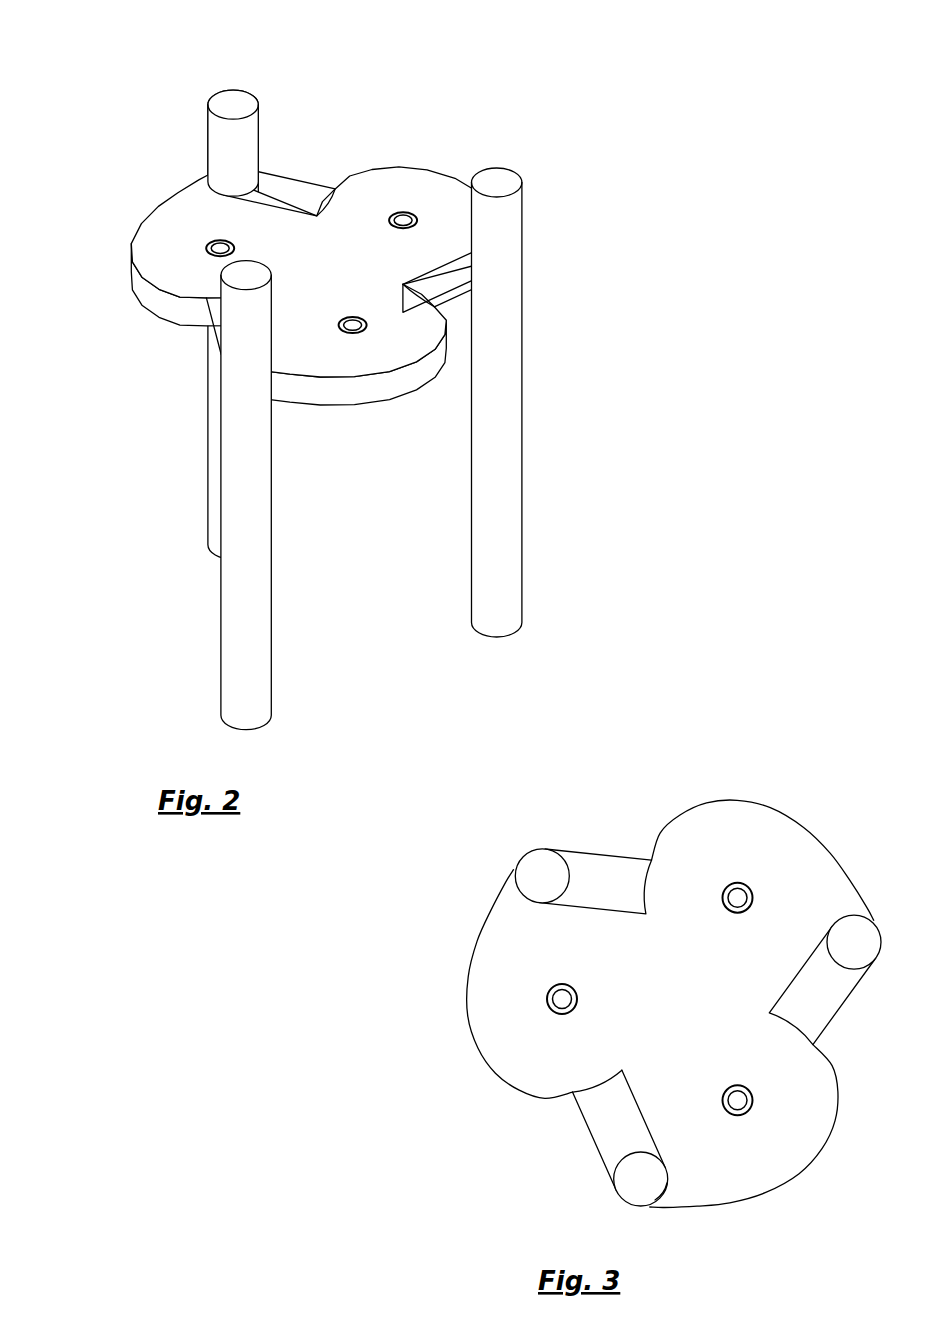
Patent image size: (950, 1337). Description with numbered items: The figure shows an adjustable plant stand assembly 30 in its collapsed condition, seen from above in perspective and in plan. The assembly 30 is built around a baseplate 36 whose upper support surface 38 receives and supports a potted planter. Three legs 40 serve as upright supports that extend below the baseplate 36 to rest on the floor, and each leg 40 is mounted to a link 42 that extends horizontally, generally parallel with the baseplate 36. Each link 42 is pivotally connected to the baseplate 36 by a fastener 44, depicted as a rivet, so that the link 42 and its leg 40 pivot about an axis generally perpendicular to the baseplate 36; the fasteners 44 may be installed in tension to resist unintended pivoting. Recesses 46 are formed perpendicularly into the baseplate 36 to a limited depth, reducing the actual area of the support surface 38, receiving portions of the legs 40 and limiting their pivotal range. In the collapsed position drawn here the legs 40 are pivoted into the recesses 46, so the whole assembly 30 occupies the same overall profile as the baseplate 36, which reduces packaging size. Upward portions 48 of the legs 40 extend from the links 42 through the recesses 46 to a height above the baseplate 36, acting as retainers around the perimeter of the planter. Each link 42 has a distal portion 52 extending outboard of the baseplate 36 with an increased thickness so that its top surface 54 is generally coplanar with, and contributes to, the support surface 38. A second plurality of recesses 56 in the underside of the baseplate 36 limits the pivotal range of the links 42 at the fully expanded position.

In FIG. 2, the adjustable plant stand assembly 30 is at (331, 391).
In FIG. 3, the adjustable plant stand assembly 30 is at (604, 935).
In FIG. 2, the baseplate 36 is at (133, 280).
In FIG. 3, the baseplate 36 is at (600, 1003).
In FIG. 2, the upper support surface 38 is at (165, 232).
In FIG. 3, the upper support surface 38 is at (520, 940).
In FIG. 2, the legs 40 is at (262, 665).
In FIG. 3, the legs 40 is at (612, 1185).
In FIG. 2, the link 42 is at (502, 320).
In FIG. 3, the link 42 is at (513, 1118).
In FIG. 2, the fastener 44 is at (368, 331).
In FIG. 3, the fastener 44 is at (547, 1000).
In FIG. 2, the recesses 46 is at (258, 362).
In FIG. 3, the recesses 46 is at (662, 1193).
In FIG. 2, the upward portions 48 is at (505, 212).
In FIG. 3, the upward portions 48 is at (535, 870).
In FIG. 2, the distal portion 52 is at (455, 283).
In FIG. 3, the distal portion 52 is at (600, 1105).
In FIG. 2, the top surface 54 is at (453, 267).
In FIG. 3, the top surface 54 is at (607, 1148).
In FIG. 2, the second plurality of recesses 56 is at (360, 398).